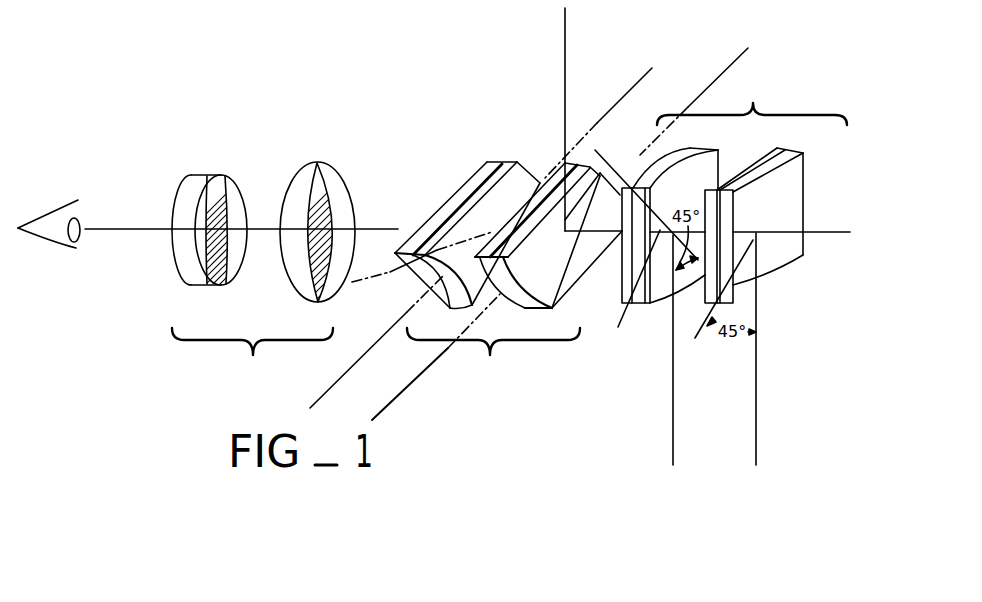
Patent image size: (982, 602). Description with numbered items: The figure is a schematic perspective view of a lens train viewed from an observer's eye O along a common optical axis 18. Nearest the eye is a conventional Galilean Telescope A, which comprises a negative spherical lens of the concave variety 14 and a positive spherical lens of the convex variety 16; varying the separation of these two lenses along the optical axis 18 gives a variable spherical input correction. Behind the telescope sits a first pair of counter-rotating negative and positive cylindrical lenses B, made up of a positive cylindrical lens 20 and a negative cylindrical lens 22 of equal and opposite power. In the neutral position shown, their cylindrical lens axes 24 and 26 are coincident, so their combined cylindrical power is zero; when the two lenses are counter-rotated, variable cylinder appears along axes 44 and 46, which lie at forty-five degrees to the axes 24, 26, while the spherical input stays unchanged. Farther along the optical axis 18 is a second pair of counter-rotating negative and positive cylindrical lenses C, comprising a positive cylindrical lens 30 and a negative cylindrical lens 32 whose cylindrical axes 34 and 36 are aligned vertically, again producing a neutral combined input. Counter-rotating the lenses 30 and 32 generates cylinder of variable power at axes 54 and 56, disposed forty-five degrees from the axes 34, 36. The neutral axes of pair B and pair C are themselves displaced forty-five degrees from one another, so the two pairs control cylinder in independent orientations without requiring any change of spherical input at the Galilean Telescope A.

The observer's eye O is at (58, 242).
The negative spherical lens 14 is at (236, 174).
The positive spherical lens 16 is at (333, 173).
The optical axis 18 is at (398, 230).
The positive cylindrical lens 20 is at (540, 185).
The negative cylindrical lens 22 is at (598, 186).
The cylindrical lens axis 24 is at (634, 86).
The cylindrical lens axis 26 is at (733, 62).
The positive cylindrical lens 30 is at (643, 305).
The negative cylindrical lens 32 is at (782, 268).
The cylindrical axis 34 is at (673, 415).
The cylindrical axis 36 is at (756, 415).
The axis 44 is at (385, 272).
The axis 46 is at (567, 27).
The axis 54 is at (630, 291).
The axis 56 is at (728, 280).
The Galilean Telescope A is at (252, 356).
The first pair of counter-rotating negative and positive cylindrical lenses B is at (493, 359).
The second pair of counter-rotating negative and positive cylindrical lenses C is at (752, 108).